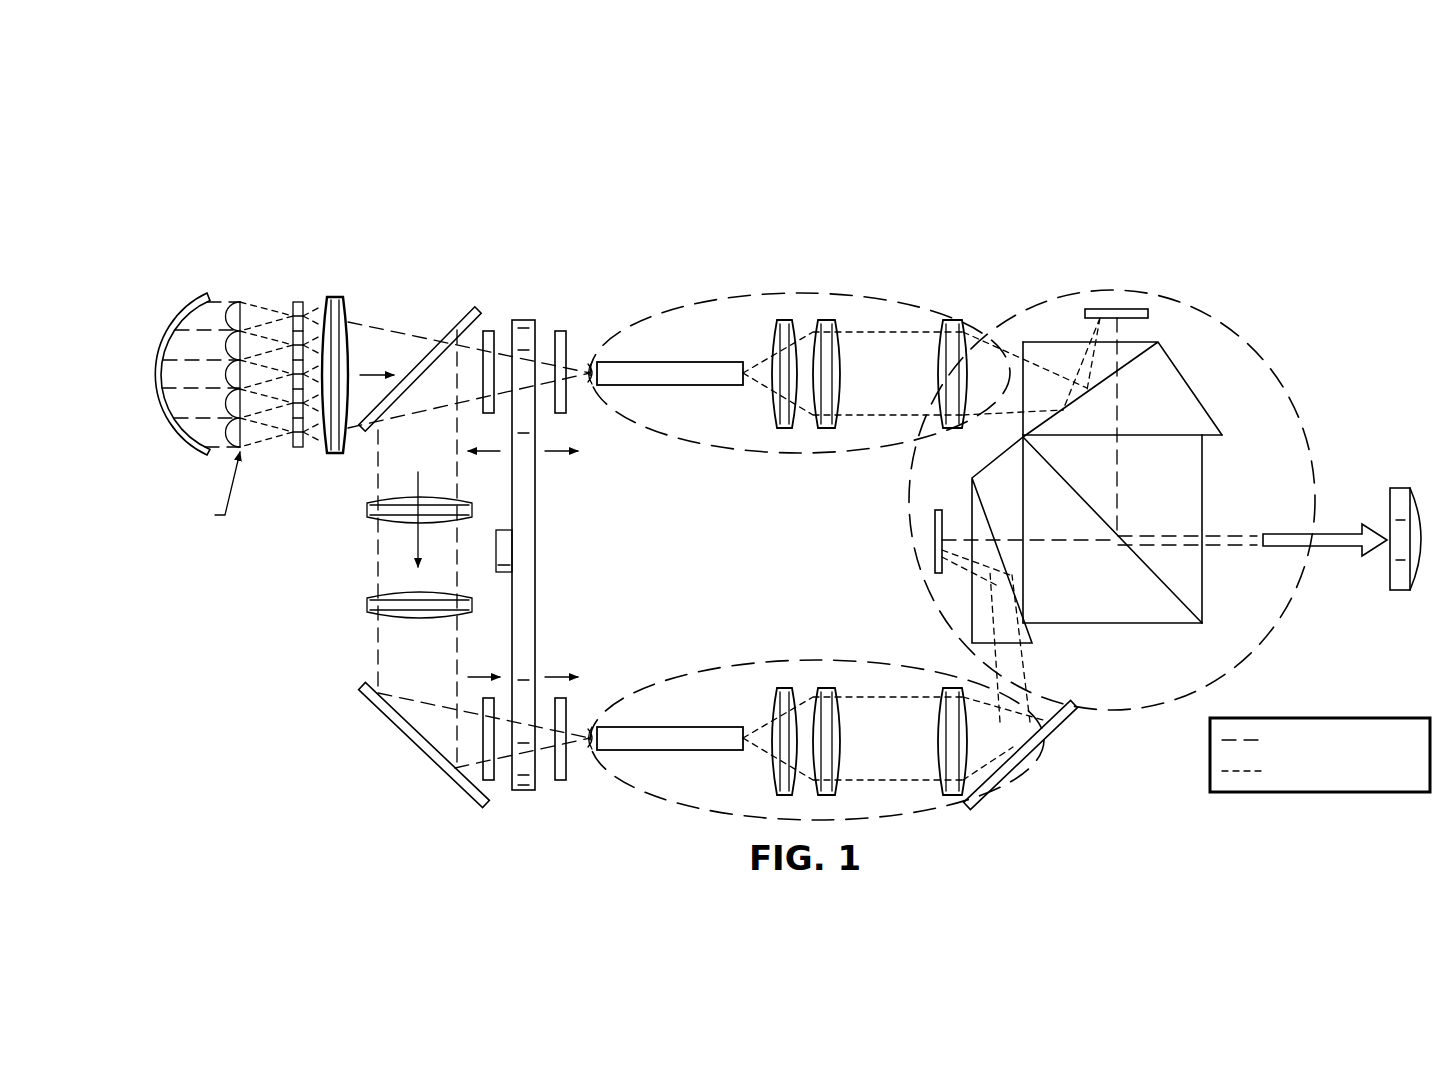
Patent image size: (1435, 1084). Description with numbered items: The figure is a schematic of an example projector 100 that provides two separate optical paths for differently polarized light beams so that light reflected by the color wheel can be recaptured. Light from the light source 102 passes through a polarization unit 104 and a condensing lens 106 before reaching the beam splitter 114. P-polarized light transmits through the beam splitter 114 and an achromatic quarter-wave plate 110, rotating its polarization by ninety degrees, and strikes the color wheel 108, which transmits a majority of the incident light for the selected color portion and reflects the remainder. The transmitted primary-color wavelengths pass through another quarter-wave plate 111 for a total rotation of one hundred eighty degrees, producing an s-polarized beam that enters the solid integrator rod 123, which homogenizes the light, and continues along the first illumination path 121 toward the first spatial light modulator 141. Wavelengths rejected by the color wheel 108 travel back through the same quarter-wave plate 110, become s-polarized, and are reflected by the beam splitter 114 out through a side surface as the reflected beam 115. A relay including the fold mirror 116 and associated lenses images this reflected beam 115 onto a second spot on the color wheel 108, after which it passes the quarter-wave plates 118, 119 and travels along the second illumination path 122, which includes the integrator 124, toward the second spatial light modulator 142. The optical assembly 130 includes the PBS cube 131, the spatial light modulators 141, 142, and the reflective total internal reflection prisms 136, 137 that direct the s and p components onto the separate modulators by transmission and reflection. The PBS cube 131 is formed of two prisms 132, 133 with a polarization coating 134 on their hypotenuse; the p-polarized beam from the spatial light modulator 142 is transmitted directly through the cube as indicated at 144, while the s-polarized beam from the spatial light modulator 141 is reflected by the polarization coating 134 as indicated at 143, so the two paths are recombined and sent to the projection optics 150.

The projector 100 is at (1116, 180).
The light source 102 is at (193, 292).
The polarization unit 104 is at (298, 449).
The condensing lens 106 is at (332, 296).
The color wheel 108 is at (535, 548).
The polarization rotator 110 is at (490, 330).
The polarization rotator 111 is at (563, 330).
The beam splitter 114 is at (442, 306).
The reflected beam 115 is at (418, 470).
The fold mirror 116 is at (420, 748).
The polarization rotator 118 is at (490, 782).
The polarization rotator 119 is at (561, 782).
The first illumination path 121 is at (860, 296).
The second illumination path 122 is at (758, 661).
The integrator rod 123 is at (692, 362).
The integrator 124 is at (690, 752).
The optical assembly 130 is at (1240, 330).
The polarized beam splitter cube 131 is at (1105, 512).
The prism 132 is at (1115, 625).
The prism 133 is at (1193, 464).
The polarization coating 134 is at (1072, 488).
The total internal reflection prism 136 is at (1166, 366).
The total internal reflection prism 137 is at (971, 496).
The spatial light modulator 141 is at (1130, 308).
The spatial light modulator 142 is at (935, 530).
The reflected s-polarized beam 143 is at (1216, 534).
The transmitted p-polarized beam 144 is at (1216, 548).
The projection optics 150 is at (1398, 487).